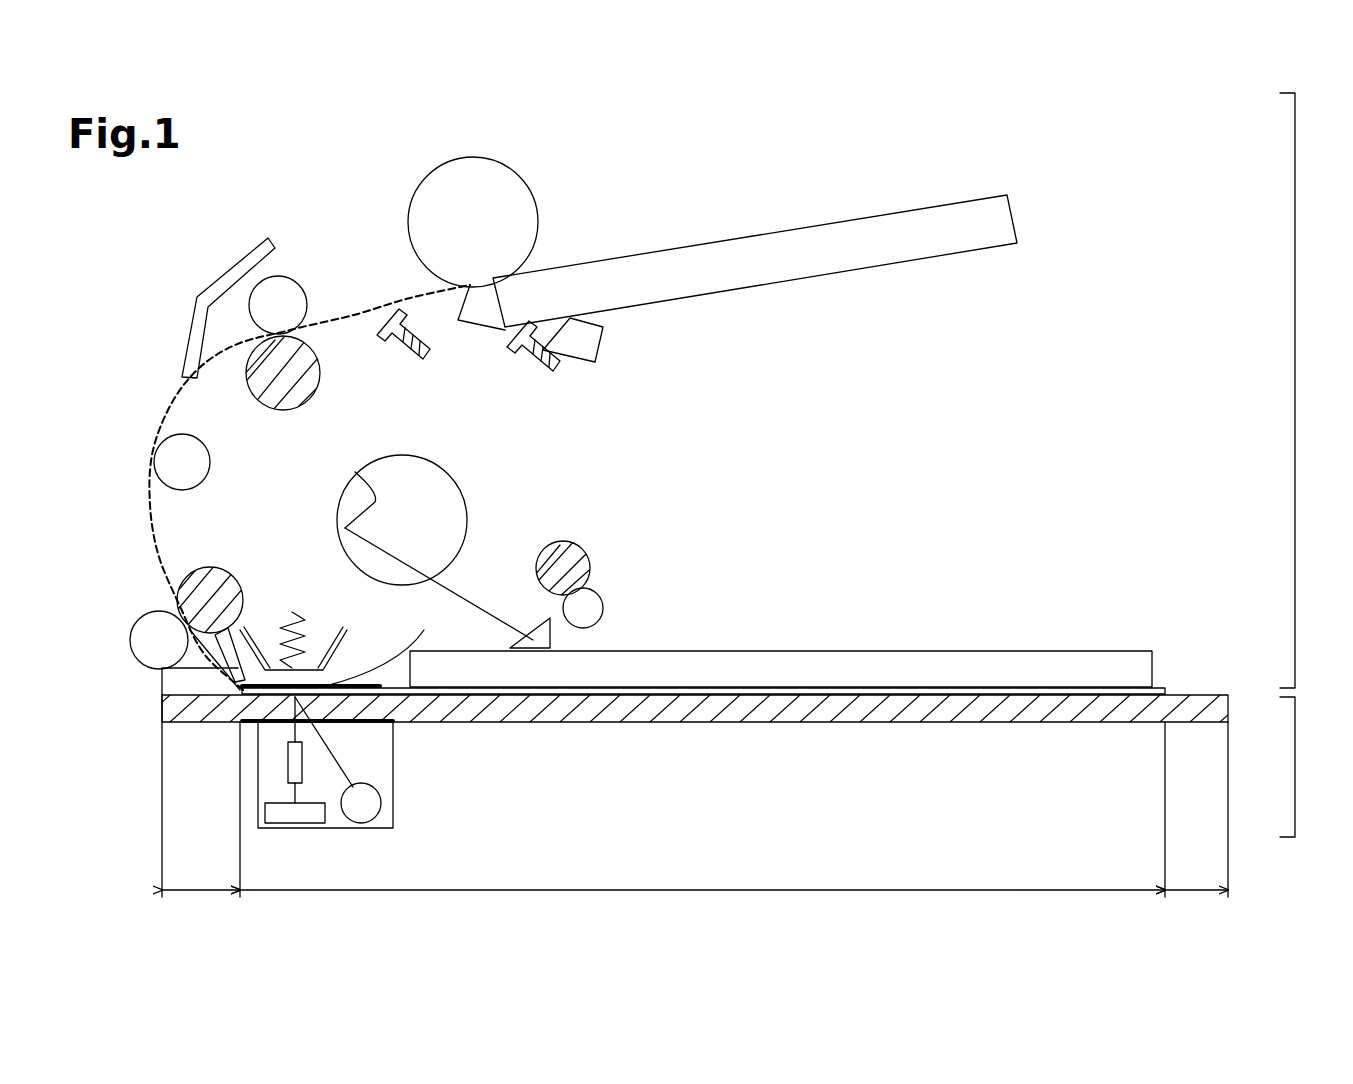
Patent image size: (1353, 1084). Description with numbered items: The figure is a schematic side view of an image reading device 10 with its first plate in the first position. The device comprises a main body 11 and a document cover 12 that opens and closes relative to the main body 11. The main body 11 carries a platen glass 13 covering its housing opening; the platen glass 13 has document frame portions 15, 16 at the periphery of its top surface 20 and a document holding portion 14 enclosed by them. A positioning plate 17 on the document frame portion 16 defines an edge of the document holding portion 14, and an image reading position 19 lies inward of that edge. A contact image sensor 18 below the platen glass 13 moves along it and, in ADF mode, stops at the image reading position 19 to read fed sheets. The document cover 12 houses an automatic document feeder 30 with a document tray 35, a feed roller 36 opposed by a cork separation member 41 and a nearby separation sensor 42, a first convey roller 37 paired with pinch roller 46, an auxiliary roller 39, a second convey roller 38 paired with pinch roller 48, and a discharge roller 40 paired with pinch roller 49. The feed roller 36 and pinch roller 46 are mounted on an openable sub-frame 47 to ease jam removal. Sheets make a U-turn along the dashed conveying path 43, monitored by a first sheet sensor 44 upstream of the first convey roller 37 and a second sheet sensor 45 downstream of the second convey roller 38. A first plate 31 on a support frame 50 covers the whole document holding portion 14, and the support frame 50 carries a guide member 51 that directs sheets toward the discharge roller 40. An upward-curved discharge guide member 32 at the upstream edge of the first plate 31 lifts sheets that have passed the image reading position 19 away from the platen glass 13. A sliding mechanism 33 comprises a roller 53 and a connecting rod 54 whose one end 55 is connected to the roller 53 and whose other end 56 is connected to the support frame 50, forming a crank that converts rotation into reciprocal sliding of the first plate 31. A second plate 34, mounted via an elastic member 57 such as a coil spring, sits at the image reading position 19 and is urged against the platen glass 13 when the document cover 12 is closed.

The image reading device 10 is at (1043, 150).
The main body 11 is at (1295, 770).
The document cover 12 is at (1295, 395).
The platen glass 13 is at (162, 708).
The document holding portion 14 is at (728, 888).
The document frame portion 15 is at (1195, 890).
The document frame portion 16 is at (200, 888).
The positioning plate 17 is at (162, 670).
The contact image sensor 18 is at (393, 812).
The image reading position 19 is at (293, 698).
The top surface 20 is at (1200, 693).
The automatic document feeder 30 is at (858, 318).
The first plate 31 is at (1155, 688).
The discharge guide member 32 is at (396, 682).
The sliding mechanism 33 is at (325, 517).
The second plate 34 is at (310, 660).
The document tray 35 is at (930, 205).
The feed roller 36 is at (512, 170).
The first convey roller 37 is at (320, 378).
The second convey roller 38 is at (218, 567).
The auxiliary roller 39 is at (210, 462).
The discharge roller 40 is at (568, 541).
The separation member 41 is at (605, 340).
The separation sensor 42 is at (545, 375).
The conveying path 43 is at (168, 415).
The first sheet sensor 44 is at (415, 365).
The second sheet sensor 45 is at (228, 650).
The pinch roller 46 is at (290, 280).
The sub-frame 47 is at (237, 253).
The pinch roller 48 is at (150, 612).
The pinch roller 49 is at (603, 603).
The support frame 50 is at (970, 650).
The guide member 51 is at (530, 632).
The roller 53 is at (462, 495).
The connecting rod 54 is at (453, 592).
The one end 55 is at (355, 472).
The other end 56 is at (538, 655).
The elastic member 57 is at (292, 612).